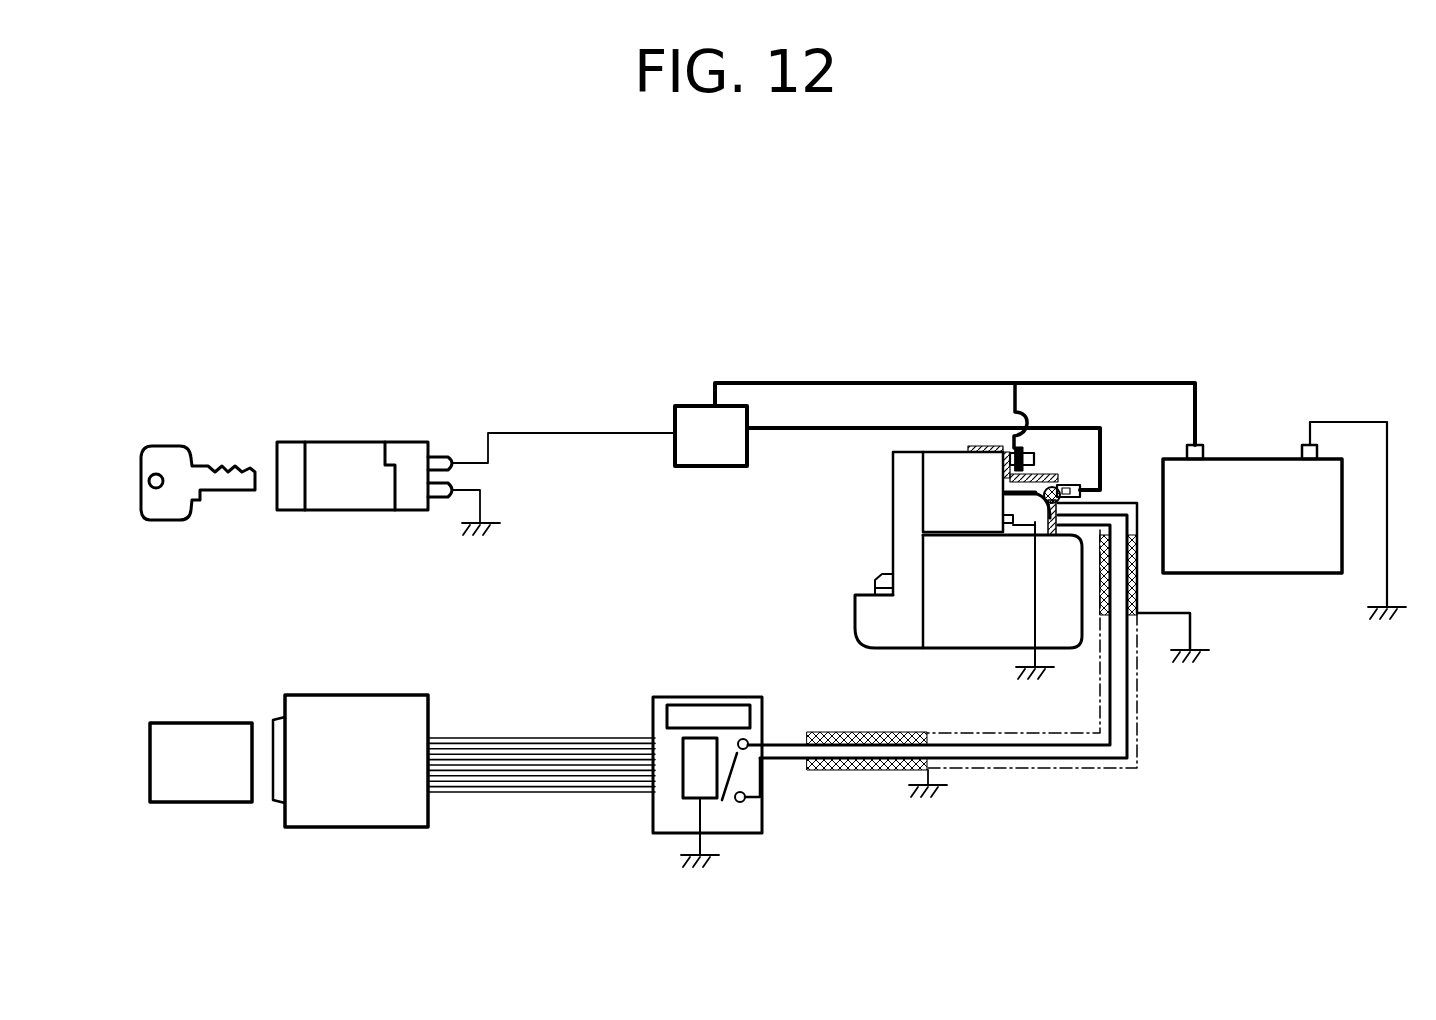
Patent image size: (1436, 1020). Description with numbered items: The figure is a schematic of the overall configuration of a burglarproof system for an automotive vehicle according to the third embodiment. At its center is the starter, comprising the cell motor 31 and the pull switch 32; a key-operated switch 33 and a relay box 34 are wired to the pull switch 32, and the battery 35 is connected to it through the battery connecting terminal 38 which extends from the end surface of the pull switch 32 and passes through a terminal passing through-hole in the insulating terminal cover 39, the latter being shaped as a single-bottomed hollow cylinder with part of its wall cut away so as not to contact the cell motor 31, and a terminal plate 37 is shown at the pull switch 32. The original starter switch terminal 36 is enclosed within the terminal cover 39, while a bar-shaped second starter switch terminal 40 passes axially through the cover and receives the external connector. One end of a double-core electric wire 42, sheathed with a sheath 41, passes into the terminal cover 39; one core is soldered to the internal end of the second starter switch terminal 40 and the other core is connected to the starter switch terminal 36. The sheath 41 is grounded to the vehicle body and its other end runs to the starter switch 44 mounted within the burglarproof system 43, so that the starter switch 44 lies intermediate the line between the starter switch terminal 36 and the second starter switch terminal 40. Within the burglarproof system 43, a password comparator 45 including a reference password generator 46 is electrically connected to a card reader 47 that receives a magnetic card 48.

The cell motor 31 is at (975, 630).
The pull switch 32 is at (935, 480).
The ignition key switch 33 is at (343, 497).
The relay box 34 is at (688, 425).
The battery 35 is at (1272, 560).
The starter switch terminal 36 is at (1005, 492).
The terminal plate 37 is at (880, 578).
The battery connecting terminal 38 is at (1035, 460).
The terminal cover 39 is at (1060, 488).
The second starter switch terminal 40 is at (1078, 488).
The sheath 41 is at (870, 735).
The double-core electric wire 42 is at (1137, 722).
The burglarproof system 43 is at (537, 712).
The starter switch 44 is at (762, 770).
The password comparator 45 is at (665, 818).
The reference password generator 46 is at (705, 705).
The card reader 47 is at (385, 808).
The magnetic card 48 is at (204, 785).